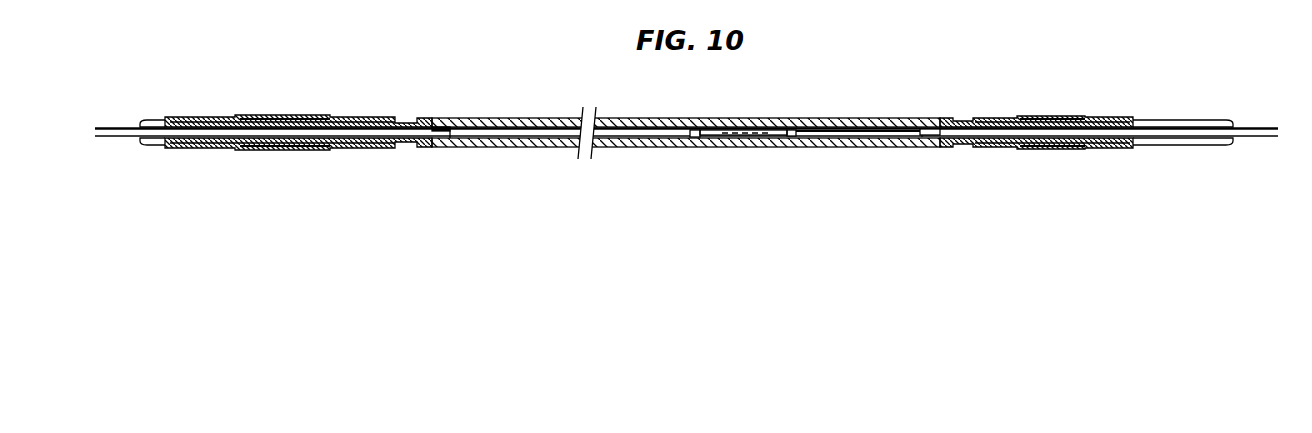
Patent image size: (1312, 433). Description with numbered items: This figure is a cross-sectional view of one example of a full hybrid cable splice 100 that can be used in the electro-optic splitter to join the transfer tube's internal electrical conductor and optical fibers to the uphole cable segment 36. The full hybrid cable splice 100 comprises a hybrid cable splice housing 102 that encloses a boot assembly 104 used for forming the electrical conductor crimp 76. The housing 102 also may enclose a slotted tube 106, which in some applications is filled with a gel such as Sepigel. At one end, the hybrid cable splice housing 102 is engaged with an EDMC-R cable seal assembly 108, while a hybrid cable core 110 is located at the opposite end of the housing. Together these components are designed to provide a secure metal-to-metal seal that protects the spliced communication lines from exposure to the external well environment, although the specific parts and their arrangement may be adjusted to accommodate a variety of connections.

The full hybrid cable splice 100 is at (753, 96).
The uphole cable segment 36 is at (1263, 140).
The hybrid cable splice housing 102 is at (893, 119).
The boot assembly 104 is at (724, 135).
The slotted tube 106 is at (555, 120).
The EDMC-R cable seal assembly 108 is at (1100, 148).
The hybrid cable core 110 is at (446, 136).
The electrical conductor crimp 76 is at (738, 133).